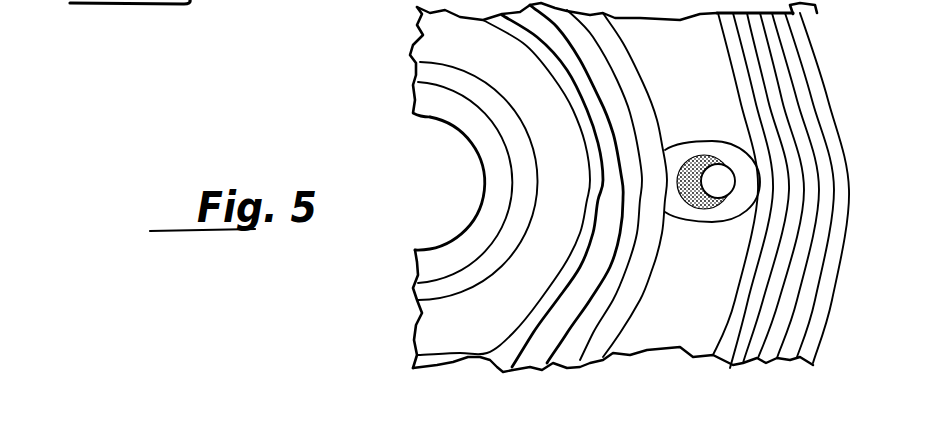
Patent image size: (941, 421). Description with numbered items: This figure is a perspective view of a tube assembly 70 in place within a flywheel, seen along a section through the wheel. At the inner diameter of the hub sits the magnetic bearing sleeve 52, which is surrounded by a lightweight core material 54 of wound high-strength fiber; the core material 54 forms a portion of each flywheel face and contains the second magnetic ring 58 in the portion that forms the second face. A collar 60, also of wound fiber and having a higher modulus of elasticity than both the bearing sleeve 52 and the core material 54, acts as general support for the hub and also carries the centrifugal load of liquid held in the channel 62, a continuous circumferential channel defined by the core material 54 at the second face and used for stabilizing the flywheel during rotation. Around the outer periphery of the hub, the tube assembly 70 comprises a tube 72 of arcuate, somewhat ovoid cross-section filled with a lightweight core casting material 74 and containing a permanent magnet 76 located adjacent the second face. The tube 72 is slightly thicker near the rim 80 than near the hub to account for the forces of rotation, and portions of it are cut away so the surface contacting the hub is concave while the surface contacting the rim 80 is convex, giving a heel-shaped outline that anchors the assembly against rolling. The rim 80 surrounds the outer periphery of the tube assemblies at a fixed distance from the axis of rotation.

The magnetic bearing sleeve 52 is at (452, 248).
The core material 54 is at (628, 130).
The second magnetic ring 58 is at (525, 87).
The collar 60 is at (632, 297).
The channel 62 is at (593, 90).
The tube assembly 70 is at (700, 140).
The tube 72 is at (734, 210).
The core casting material 74 is at (694, 204).
The permanent magnet 76 is at (718, 176).
The rim 80 is at (812, 174).